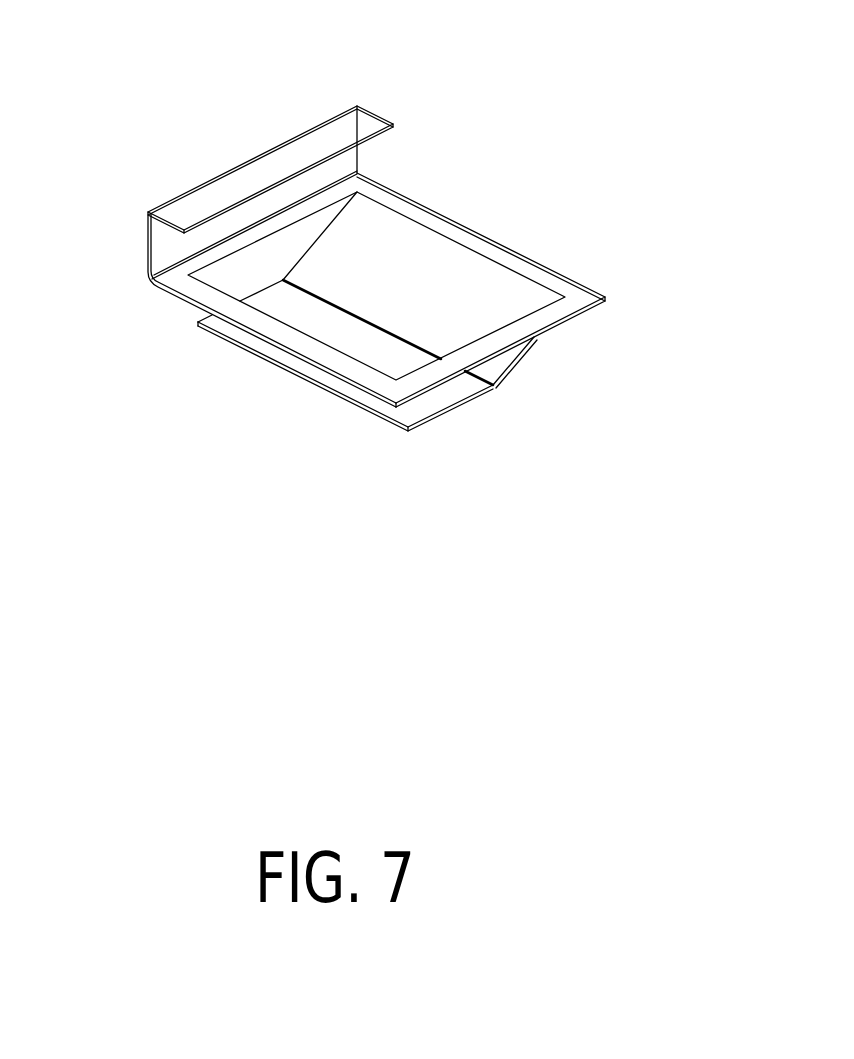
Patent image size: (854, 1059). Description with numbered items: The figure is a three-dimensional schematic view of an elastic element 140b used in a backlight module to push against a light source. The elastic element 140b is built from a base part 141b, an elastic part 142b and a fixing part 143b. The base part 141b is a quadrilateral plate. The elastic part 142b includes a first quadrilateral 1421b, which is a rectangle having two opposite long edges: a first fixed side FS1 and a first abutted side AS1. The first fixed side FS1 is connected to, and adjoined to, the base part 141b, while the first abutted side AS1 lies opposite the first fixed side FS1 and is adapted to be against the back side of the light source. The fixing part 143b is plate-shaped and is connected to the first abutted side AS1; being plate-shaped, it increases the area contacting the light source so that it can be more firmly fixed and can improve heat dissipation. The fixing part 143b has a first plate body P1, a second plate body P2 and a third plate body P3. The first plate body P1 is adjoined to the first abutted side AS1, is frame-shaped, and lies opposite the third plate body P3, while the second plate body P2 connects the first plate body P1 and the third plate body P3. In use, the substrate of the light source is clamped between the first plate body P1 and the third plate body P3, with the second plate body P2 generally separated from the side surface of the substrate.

The elastic element 140b is at (122, 37).
The fixing part 143b is at (487, 57).
The third plate body P3 is at (365, 120).
The second plate body P2 is at (350, 160).
The first plate body P1 is at (460, 269).
The elastic part 142b is at (460, 290).
The first quadrilateral 1421b is at (510, 310).
The first abutted side AS1 is at (510, 267).
The base part 141b is at (381, 386).
The first fixed side FS1 is at (493, 385).